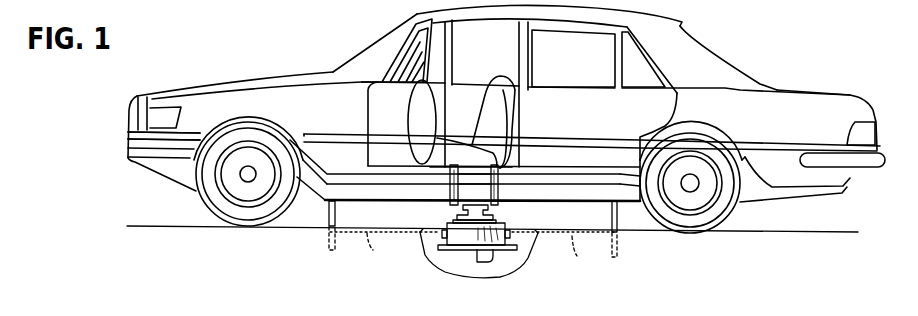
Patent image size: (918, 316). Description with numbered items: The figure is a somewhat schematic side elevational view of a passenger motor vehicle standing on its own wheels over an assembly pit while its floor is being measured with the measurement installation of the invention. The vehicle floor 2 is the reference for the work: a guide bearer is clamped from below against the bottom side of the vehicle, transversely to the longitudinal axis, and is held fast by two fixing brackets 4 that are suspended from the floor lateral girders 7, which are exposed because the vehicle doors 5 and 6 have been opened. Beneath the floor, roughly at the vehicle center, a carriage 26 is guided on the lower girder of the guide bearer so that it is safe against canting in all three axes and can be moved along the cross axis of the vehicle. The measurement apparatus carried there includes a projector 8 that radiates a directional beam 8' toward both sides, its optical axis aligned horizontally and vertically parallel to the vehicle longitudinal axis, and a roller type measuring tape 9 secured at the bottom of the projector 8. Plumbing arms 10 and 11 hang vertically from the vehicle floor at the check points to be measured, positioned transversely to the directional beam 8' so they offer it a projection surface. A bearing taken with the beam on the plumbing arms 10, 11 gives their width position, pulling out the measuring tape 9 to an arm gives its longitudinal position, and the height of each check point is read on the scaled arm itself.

The vehicle floor 2 is at (547, 212).
The fixing brackets 4 is at (498, 184).
The vehicle door 5 is at (398, 113).
The vehicle door 6 is at (449, 58).
The floor lateral girders 7 is at (440, 180).
The projector 8 is at (461, 252).
The directional beam 8' is at (478, 254).
The roller type measuring tape 9 is at (483, 262).
The plumbing arm 10 is at (617, 218).
The plumbing arm 11 is at (327, 243).
The carriage 26 is at (453, 218).